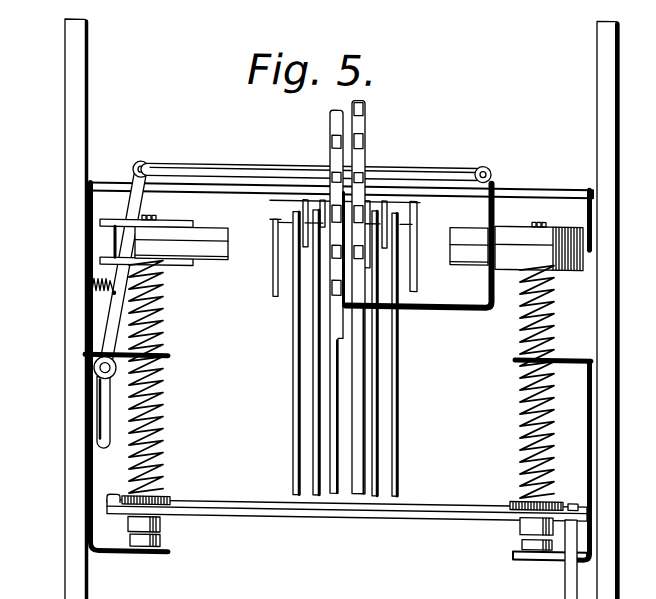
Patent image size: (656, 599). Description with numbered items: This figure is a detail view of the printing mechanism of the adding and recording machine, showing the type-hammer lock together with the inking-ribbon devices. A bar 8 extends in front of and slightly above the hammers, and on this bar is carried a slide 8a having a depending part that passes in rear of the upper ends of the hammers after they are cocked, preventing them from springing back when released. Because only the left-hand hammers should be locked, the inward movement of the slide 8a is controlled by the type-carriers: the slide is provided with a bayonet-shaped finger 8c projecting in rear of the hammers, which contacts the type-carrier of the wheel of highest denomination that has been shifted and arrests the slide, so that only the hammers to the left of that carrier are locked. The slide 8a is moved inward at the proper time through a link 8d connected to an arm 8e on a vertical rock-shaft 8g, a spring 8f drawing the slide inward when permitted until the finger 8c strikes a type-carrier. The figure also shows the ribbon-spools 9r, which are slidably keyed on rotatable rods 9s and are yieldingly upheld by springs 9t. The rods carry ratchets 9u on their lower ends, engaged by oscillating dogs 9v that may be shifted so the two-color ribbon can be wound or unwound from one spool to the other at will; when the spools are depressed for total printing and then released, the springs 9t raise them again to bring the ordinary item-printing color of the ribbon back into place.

The bar 8 is at (515, 189).
The slide 8a is at (438, 171).
The bayonet-shaped finger 8c is at (442, 302).
The link 8d is at (233, 157).
The arm 8e is at (117, 278).
The spring 8f is at (92, 298).
The vertical rock-shaft 8g is at (100, 371).
The ribbon-spool 9r is at (177, 263).
The rotatable rod 9s is at (158, 405).
The spring 9t is at (163, 450).
The ratchet 9u is at (170, 496).
The oscillating dog 9v is at (115, 494).